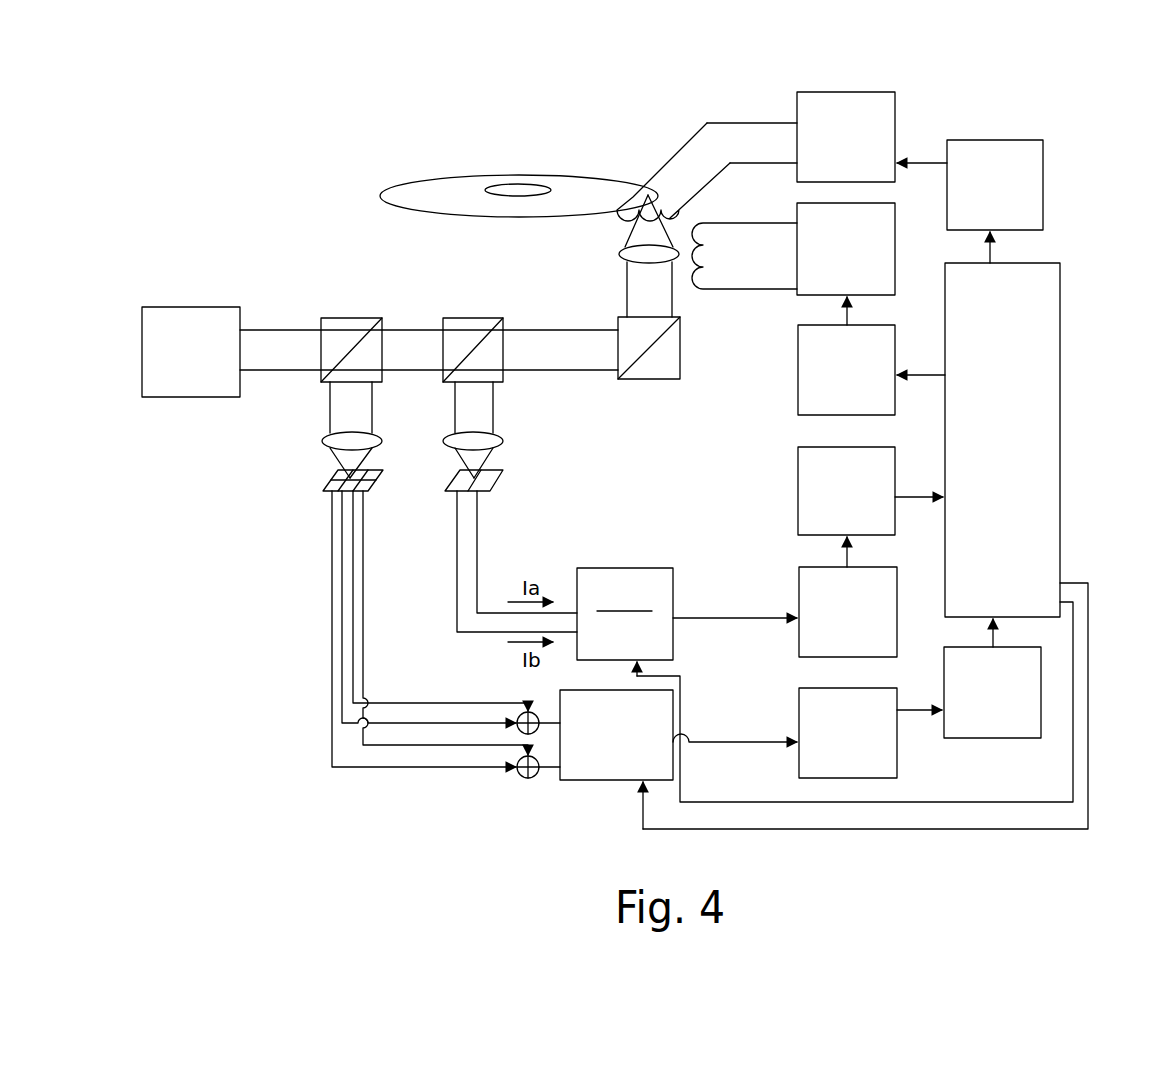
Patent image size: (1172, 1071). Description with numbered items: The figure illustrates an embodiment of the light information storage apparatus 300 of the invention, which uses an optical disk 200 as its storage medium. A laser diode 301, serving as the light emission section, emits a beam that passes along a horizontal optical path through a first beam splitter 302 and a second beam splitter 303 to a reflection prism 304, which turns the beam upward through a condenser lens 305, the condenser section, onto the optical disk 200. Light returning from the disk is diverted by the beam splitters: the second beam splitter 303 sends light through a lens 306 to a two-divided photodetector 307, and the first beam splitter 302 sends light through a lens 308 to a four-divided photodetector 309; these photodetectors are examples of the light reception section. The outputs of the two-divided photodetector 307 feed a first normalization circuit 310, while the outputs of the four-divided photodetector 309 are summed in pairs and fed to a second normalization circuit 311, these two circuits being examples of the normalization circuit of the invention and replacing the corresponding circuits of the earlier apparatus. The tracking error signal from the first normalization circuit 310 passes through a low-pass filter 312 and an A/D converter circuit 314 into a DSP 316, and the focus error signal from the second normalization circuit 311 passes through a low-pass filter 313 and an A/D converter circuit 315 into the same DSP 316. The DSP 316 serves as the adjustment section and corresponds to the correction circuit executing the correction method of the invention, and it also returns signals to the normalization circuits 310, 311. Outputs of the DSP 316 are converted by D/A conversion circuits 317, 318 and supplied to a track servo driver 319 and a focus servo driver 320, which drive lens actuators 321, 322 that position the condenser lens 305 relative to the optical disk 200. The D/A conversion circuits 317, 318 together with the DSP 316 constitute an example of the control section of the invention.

The optical disk 200 is at (430, 177).
The light information storage apparatus 300 is at (297, 655).
The laser diode 301 is at (202, 307).
The first beam splitter 302 is at (355, 318).
The second beam splitter 303 is at (478, 318).
The reflection prism 304 is at (655, 380).
The condenser lens 305 is at (618, 258).
The lens 306 is at (503, 441).
The 2-divided photodetector 307 is at (503, 483).
The lens 308 is at (322, 441).
The 4-divided photodetector 309 is at (325, 483).
The first normalization circuit 310 is at (673, 640).
The second normalization circuit 311 is at (580, 780).
The low-pass filter 312 is at (799, 583).
The low-pass filter 313 is at (897, 762).
The A/D converter circuit 314 is at (798, 467).
The A/D converter circuit 315 is at (993, 738).
The DSP 316 is at (1060, 298).
The D/A conversion circuit 317 is at (798, 375).
The D/A conversion circuit 318 is at (1000, 140).
The track servo driver 319 is at (815, 295).
The focus servo driver 320 is at (858, 92).
The lens actuator 321 is at (683, 290).
The lens actuator 322 is at (627, 223).